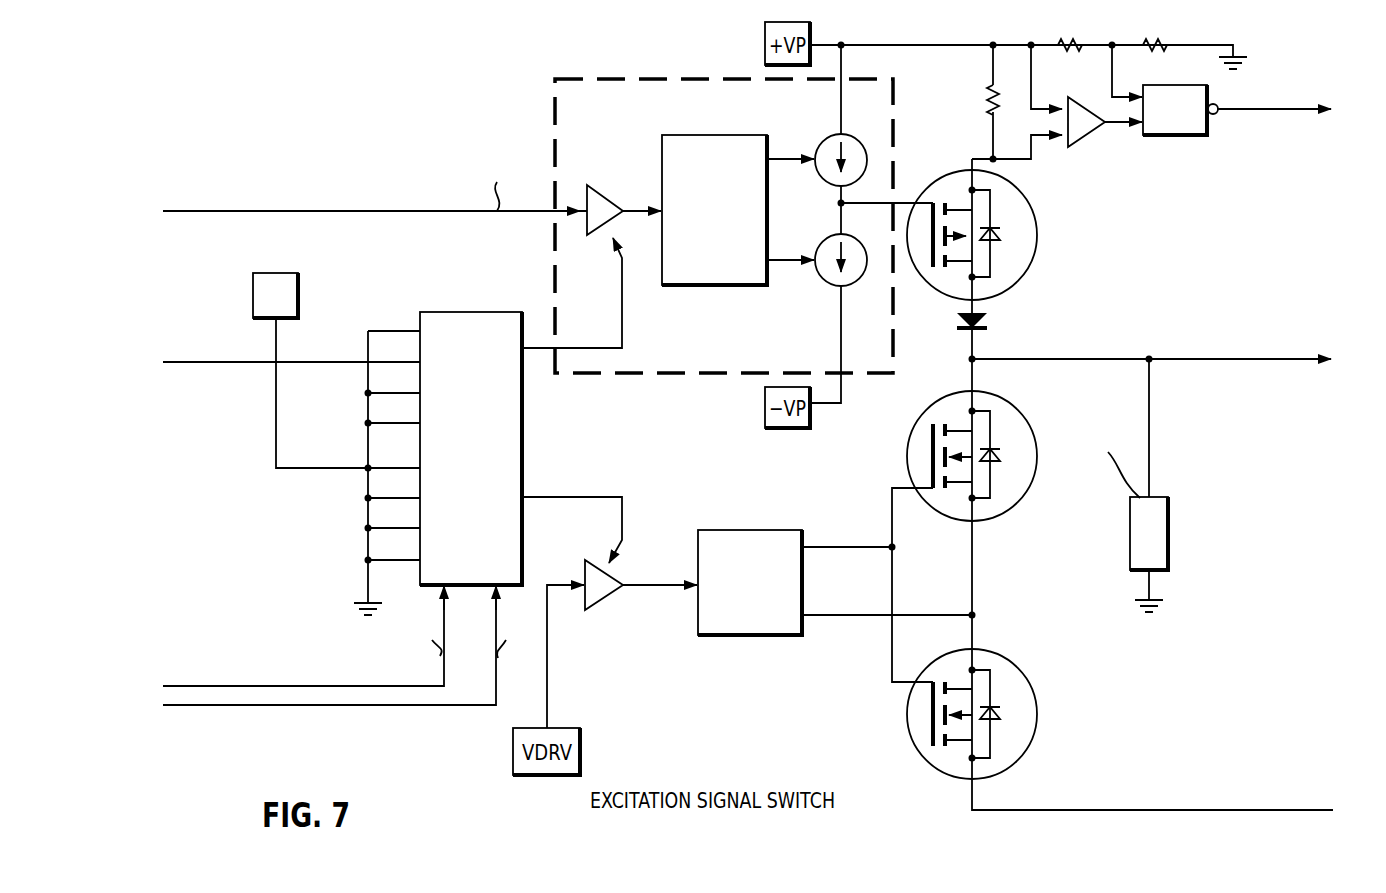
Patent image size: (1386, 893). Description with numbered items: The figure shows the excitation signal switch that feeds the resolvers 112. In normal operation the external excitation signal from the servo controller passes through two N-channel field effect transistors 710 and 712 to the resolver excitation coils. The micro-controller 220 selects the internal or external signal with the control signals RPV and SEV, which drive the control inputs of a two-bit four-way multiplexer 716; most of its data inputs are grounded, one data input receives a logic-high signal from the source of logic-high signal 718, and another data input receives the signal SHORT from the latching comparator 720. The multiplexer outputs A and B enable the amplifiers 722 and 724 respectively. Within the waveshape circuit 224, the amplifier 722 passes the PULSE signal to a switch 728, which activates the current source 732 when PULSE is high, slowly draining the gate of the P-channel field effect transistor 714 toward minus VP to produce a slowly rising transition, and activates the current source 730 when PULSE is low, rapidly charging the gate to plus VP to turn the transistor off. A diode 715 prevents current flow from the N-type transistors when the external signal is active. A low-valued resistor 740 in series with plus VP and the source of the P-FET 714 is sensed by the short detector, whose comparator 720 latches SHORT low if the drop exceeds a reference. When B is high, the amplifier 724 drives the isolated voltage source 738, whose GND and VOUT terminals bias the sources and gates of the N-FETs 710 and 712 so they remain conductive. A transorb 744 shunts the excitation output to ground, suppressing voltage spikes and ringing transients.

The micro-controller 220 is at (375, 423).
The source of logic-high signal 718 is at (298, 293).
The two-bit four-way multiplexer 716 is at (522, 418).
The amplifier 724 is at (600, 606).
The isolated voltage source 738 is at (776, 535).
The waveshape circuit 224 is at (650, 78).
The amplifier 722 is at (598, 188).
The switch 728 is at (735, 158).
The current source 730 is at (860, 142).
The controlled current source 732 is at (858, 278).
The resistor 740 is at (985, 100).
The latching comparator 720 is at (1165, 135).
The P-channel field effect transistor 714 is at (1025, 275).
The diode 715 is at (988, 322).
The resolvers 112 is at (1150, 318).
The N-channel field effect transistor 712 is at (1025, 493).
The transorb 744 is at (1158, 553).
The N-channel field effect transistor 710 is at (1033, 695).